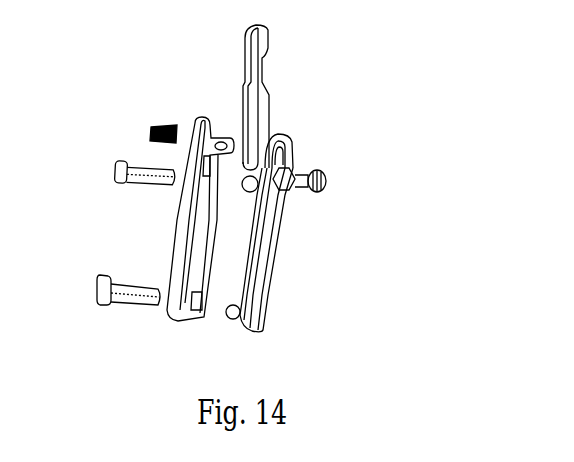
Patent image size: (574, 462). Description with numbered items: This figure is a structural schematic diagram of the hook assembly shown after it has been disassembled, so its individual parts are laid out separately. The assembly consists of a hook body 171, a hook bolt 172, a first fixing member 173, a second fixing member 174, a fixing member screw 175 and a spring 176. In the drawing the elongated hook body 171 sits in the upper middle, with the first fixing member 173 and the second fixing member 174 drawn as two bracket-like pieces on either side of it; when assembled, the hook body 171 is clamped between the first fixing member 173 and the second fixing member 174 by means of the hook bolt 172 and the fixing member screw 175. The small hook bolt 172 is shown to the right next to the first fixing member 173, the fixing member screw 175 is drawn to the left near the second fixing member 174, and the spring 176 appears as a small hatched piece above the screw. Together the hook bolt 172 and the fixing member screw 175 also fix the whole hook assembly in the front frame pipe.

The hook body 171 is at (276, 91).
The hook bolt 172 is at (334, 177).
The first fixing member 173 is at (301, 143).
The second fixing member 174 is at (162, 231).
The fixing member screw 175 is at (129, 280).
The spring 176 is at (151, 129).